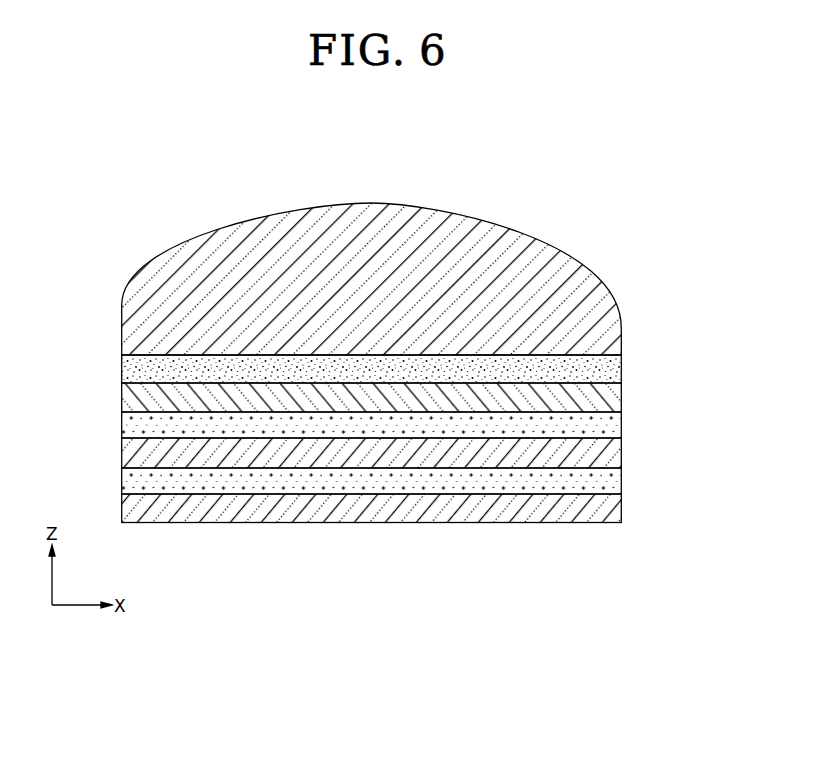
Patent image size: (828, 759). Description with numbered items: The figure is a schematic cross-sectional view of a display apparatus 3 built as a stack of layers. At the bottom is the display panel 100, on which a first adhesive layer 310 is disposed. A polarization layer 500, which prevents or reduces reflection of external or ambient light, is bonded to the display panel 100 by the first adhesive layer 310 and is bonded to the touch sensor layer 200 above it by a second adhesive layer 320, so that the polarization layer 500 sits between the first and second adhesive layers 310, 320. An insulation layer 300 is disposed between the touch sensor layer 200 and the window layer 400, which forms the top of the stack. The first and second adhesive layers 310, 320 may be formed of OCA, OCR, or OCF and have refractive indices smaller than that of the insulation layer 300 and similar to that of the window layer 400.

The display apparatus 3 is at (408, 341).
The window layer 400 is at (610, 338).
The insulation layer 300 is at (612, 372).
The touch sensor layer 200 is at (612, 400).
The second adhesive layer 320 is at (612, 428).
The polarization layer 500 is at (612, 456).
The first adhesive layer 310 is at (612, 483).
The display panel 100 is at (612, 512).